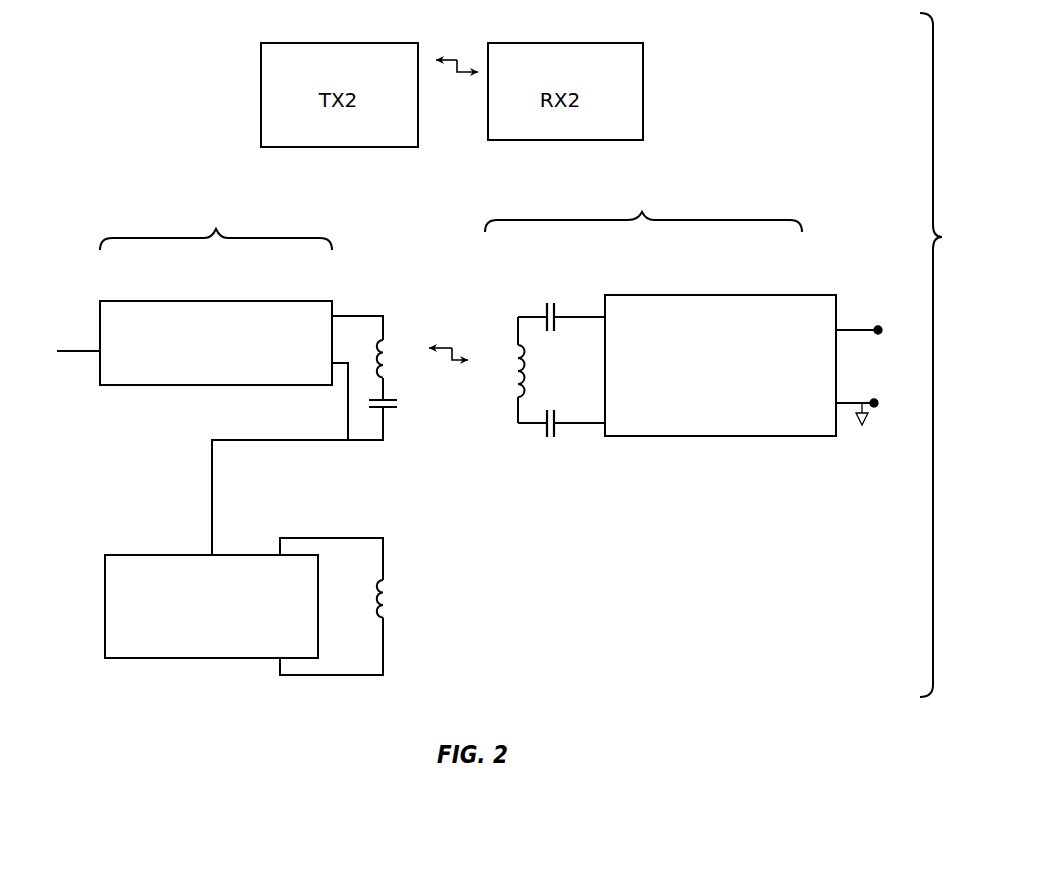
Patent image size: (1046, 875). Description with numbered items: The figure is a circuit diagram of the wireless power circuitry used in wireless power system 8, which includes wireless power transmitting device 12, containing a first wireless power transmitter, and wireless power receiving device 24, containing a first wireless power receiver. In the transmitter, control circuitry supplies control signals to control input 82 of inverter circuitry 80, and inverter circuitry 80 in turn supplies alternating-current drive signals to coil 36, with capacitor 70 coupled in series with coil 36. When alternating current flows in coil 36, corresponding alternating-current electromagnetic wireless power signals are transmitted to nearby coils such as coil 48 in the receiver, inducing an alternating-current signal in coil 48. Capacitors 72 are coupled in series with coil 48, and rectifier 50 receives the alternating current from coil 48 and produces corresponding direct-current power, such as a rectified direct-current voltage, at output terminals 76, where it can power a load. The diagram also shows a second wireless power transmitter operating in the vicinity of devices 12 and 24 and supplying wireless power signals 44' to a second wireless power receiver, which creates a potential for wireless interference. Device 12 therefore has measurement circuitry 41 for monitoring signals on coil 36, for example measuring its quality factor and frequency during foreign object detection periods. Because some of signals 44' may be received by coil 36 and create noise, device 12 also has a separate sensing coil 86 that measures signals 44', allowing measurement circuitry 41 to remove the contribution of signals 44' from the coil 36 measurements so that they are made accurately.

The wireless power system 8 is at (941, 355).
The wireless power transmitting device 12 is at (74, 226).
The wireless power receiving device 24 is at (802, 177).
The coil 36 is at (397, 338).
The measurement circuitry 41 is at (134, 659).
The wireless power signals 44' is at (453, 211).
The coil 48 is at (507, 396).
The rectifier 50 is at (708, 308).
The capacitor 70 is at (405, 416).
The capacitors 72 is at (550, 290).
The output terminals 76 is at (881, 334).
The inverter circuitry 80 is at (145, 387).
The control input 82 is at (75, 353).
The sensing coil 86 is at (405, 601).